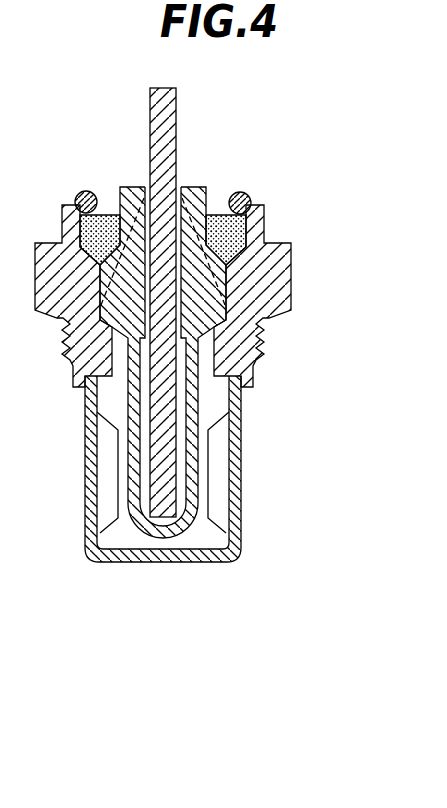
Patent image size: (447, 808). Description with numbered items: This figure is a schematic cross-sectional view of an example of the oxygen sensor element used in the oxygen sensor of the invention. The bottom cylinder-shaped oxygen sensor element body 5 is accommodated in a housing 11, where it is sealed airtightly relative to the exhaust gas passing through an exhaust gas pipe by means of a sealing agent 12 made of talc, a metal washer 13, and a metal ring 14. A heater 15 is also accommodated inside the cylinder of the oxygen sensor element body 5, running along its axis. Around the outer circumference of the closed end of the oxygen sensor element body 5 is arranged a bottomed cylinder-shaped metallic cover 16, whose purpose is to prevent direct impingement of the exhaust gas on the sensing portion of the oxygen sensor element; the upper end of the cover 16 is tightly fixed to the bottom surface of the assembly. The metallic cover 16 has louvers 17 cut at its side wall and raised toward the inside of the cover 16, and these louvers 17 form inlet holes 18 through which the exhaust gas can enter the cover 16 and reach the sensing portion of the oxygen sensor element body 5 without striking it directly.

The oxygen sensor element body 5 is at (199, 186).
The housing 11 is at (292, 297).
The sealing agent 12 is at (245, 227).
The metal washer 13 is at (107, 213).
The metal ring 14 is at (78, 193).
The heater 15 is at (170, 96).
The metallic cover 16 is at (236, 518).
The louvers 17 is at (214, 434).
The inlet holes 18 is at (233, 468).